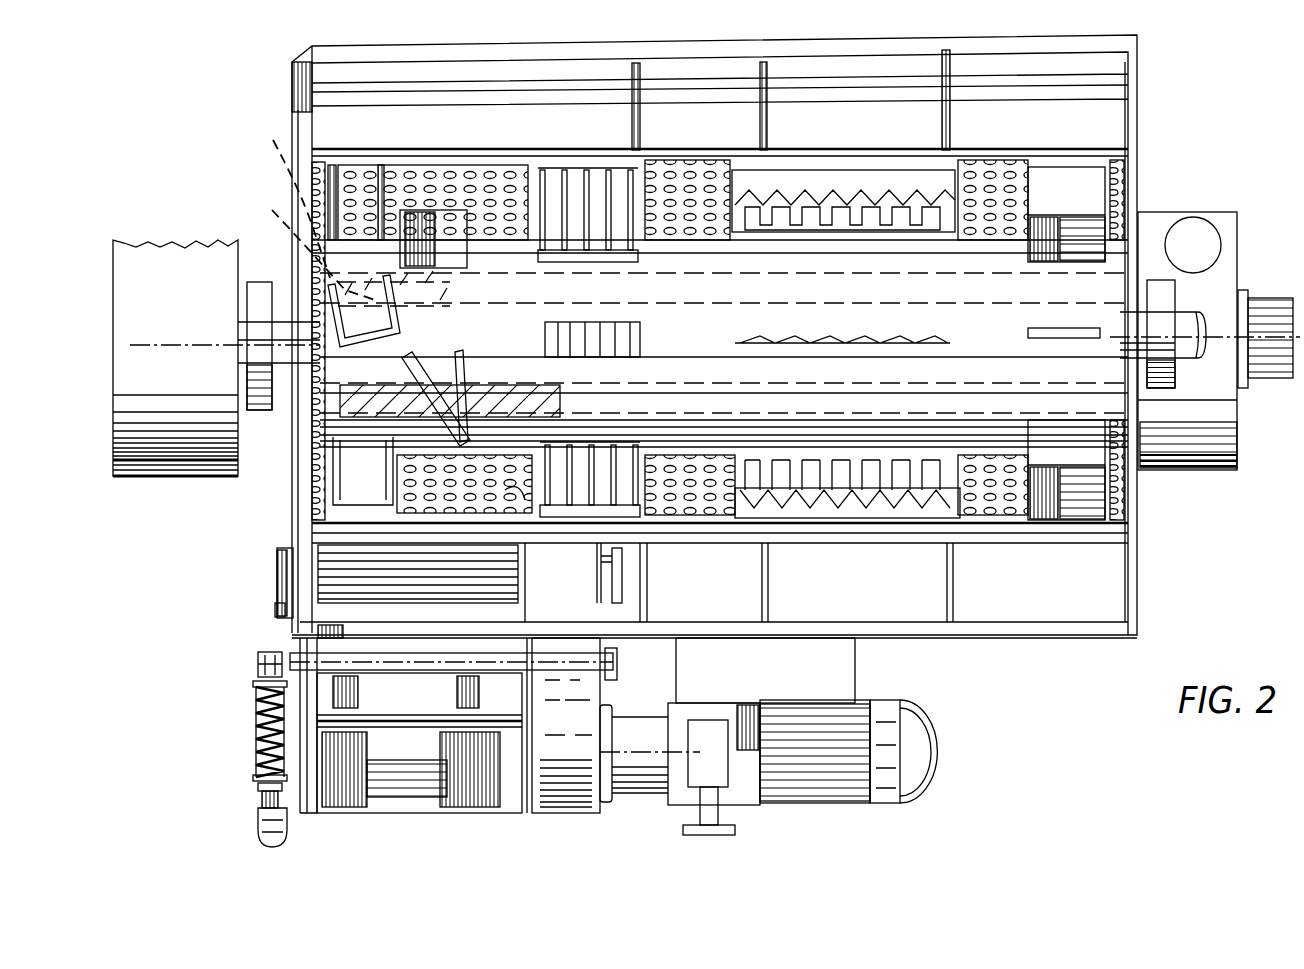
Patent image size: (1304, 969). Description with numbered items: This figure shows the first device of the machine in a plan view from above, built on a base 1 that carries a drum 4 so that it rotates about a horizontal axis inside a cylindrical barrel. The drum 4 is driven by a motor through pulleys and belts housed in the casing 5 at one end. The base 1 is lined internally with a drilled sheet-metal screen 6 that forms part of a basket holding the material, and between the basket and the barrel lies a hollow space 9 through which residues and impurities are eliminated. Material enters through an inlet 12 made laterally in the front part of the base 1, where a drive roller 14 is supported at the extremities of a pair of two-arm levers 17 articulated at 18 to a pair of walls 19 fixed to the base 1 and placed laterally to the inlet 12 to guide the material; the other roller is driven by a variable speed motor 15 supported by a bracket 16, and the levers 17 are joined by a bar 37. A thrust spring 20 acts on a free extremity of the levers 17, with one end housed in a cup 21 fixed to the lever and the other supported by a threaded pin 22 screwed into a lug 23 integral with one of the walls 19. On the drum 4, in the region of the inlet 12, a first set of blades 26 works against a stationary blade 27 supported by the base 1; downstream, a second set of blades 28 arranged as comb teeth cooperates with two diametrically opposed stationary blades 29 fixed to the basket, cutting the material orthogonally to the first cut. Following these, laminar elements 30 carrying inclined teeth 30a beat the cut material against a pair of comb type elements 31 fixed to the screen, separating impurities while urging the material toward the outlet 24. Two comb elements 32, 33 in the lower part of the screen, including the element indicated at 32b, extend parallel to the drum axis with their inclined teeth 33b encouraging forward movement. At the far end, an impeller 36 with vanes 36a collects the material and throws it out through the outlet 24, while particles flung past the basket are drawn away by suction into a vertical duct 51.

The base 1 is at (340, 52).
The drum 4 is at (975, 245).
The casing 5 is at (163, 265).
The screen 6 is at (445, 200).
The hollow space 9 is at (488, 90).
The inlet 12 is at (400, 828).
The drive roller 14 is at (340, 560).
The variable speed motor 15 is at (825, 760).
The bracket 16 is at (777, 674).
The two-arm levers 17 is at (280, 586).
The articulation 18 is at (275, 608).
The walls 19 is at (305, 812).
The thrust spring 20 is at (255, 735).
The cup 21 is at (258, 672).
The threaded pin 22 is at (262, 803).
The lug 23 is at (257, 790).
The outlet 24 is at (1060, 650).
The first set of blades 26 is at (430, 212).
The stationary blade 27 is at (515, 490).
The second set of blades 28 is at (626, 206).
The stationary blades 29 is at (590, 196).
The laminar elements 30 is at (785, 325).
The teeth 30a is at (936, 196).
The comb type elements 31 is at (790, 166).
The comb element 32 is at (345, 270).
The tilted box guide 32b is at (281, 200).
The comb element 33 is at (318, 440).
The teeth 33b is at (322, 400).
The impeller 36 is at (1075, 310).
The vanes 36a is at (1085, 190).
The bar 37 is at (507, 662).
The vertical duct 51 is at (1198, 227).